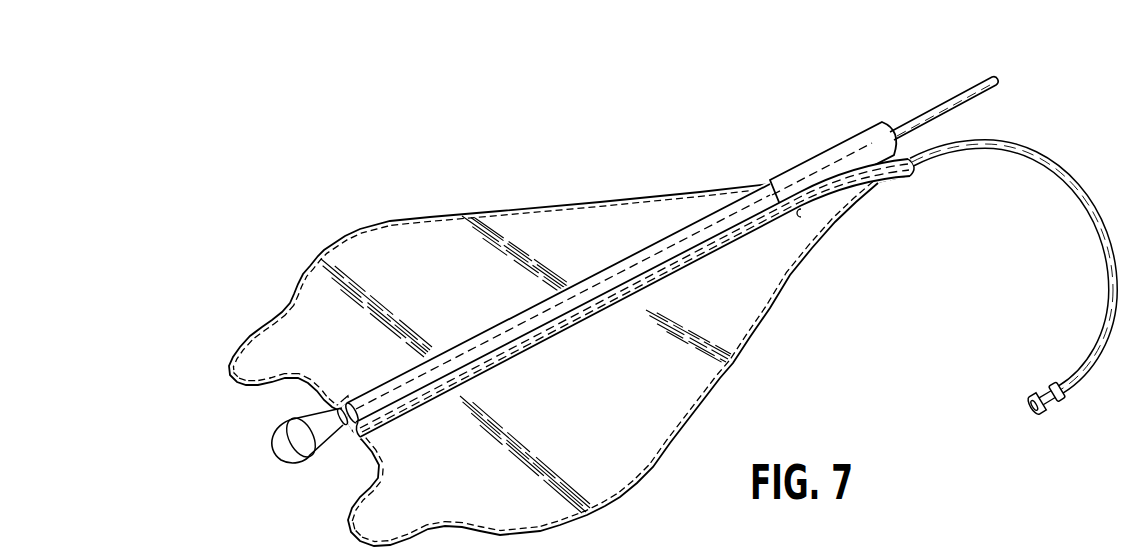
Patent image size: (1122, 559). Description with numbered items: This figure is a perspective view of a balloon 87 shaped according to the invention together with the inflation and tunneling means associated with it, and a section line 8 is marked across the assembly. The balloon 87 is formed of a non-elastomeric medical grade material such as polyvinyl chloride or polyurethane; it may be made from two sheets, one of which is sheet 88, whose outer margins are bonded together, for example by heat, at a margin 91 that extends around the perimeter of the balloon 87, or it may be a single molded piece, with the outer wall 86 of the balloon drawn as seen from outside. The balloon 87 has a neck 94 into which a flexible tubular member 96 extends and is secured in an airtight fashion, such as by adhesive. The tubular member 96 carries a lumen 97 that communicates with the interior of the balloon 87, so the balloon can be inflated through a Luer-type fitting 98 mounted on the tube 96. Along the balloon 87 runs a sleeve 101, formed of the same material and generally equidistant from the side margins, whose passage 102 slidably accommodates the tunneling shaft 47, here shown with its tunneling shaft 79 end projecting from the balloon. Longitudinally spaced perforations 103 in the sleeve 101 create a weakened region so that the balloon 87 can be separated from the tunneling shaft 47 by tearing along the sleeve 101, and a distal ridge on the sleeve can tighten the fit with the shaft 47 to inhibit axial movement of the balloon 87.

The tunneling shaft 47 is at (922, 114).
The tunneling shaft 79 is at (292, 453).
The balloon outer wall 86 is at (683, 186).
The balloon 87 is at (575, 226).
The sheet 88 is at (393, 243).
The margin 91 is at (677, 440).
The neck 94 is at (893, 188).
The flexible tubular member 96 is at (1068, 203).
The lumen 97 is at (1100, 335).
The Luer-type fitting 98 is at (1018, 407).
The sleeve 101 is at (508, 318).
The passage 102 is at (339, 408).
The perforations 103 is at (467, 342).
The section line 8- 8 is at (639, 248).